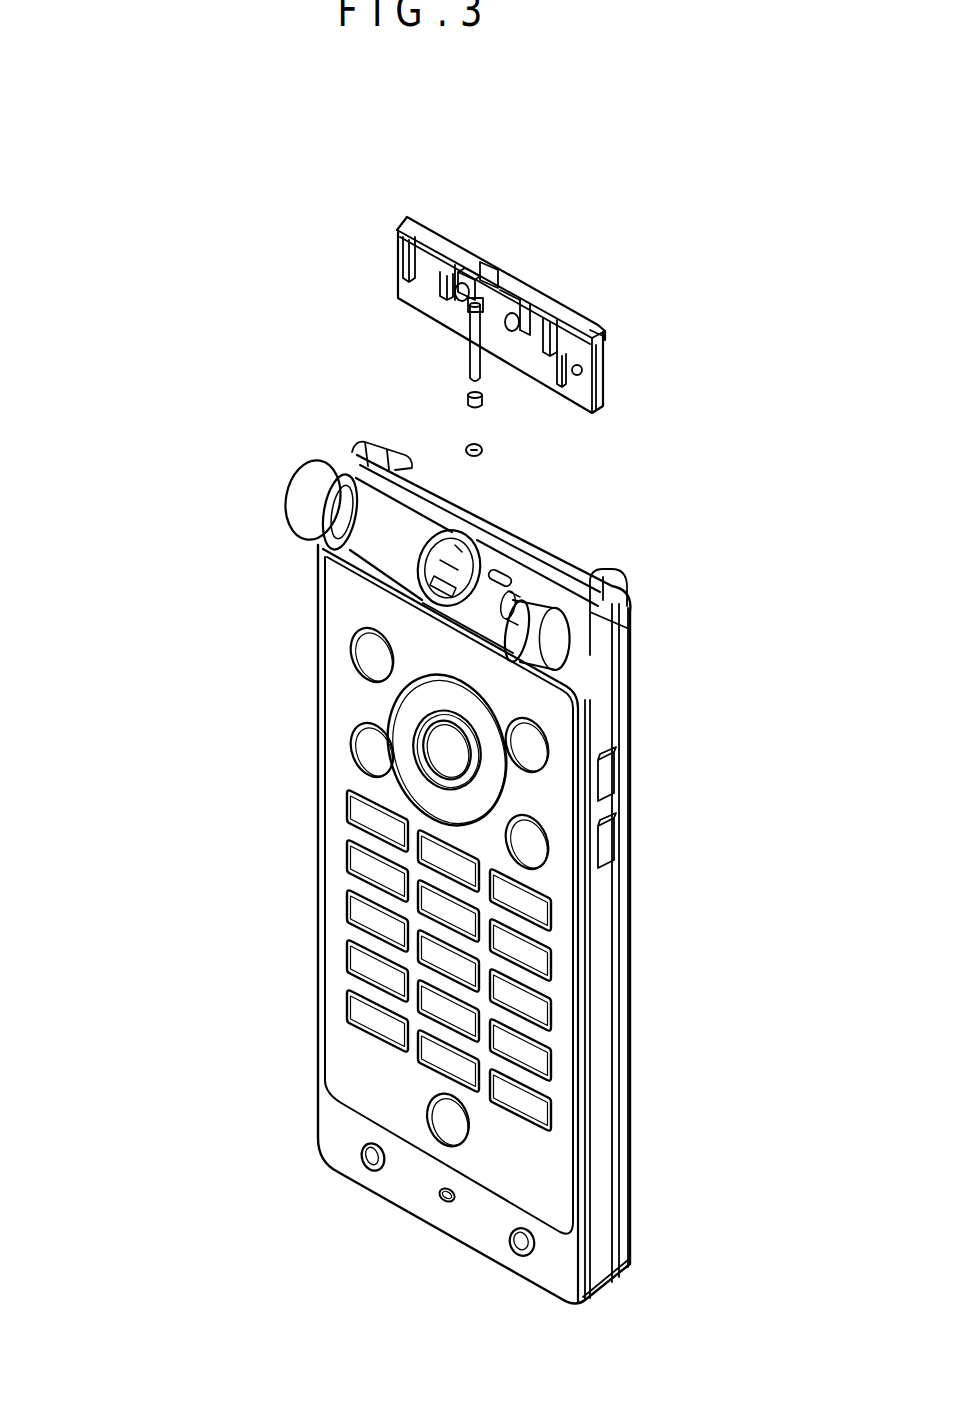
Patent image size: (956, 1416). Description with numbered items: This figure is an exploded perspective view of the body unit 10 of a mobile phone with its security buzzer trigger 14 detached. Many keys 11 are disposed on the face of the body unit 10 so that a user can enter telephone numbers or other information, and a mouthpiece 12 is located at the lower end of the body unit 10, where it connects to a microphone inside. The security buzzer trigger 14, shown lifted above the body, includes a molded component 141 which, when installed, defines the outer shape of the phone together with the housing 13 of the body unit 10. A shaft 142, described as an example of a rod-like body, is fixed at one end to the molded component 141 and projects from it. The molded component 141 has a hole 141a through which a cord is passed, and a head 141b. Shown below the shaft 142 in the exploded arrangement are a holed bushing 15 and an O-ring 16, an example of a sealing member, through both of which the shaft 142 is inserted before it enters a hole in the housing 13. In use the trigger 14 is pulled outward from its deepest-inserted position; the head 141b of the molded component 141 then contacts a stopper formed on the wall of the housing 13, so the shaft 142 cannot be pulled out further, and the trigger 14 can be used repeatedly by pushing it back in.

The body unit 10 is at (200, 652).
The keys 11 is at (382, 898).
The mouthpiece 12 is at (443, 1192).
The housing 13 is at (320, 582).
The security buzzer trigger 14 is at (441, 190).
The molded component 141 is at (559, 306).
The hole 141a is at (483, 265).
The head 141b is at (468, 292).
The shaft 142 is at (470, 365).
The holed bushing 15 is at (468, 402).
The O-ring 16 is at (466, 450).